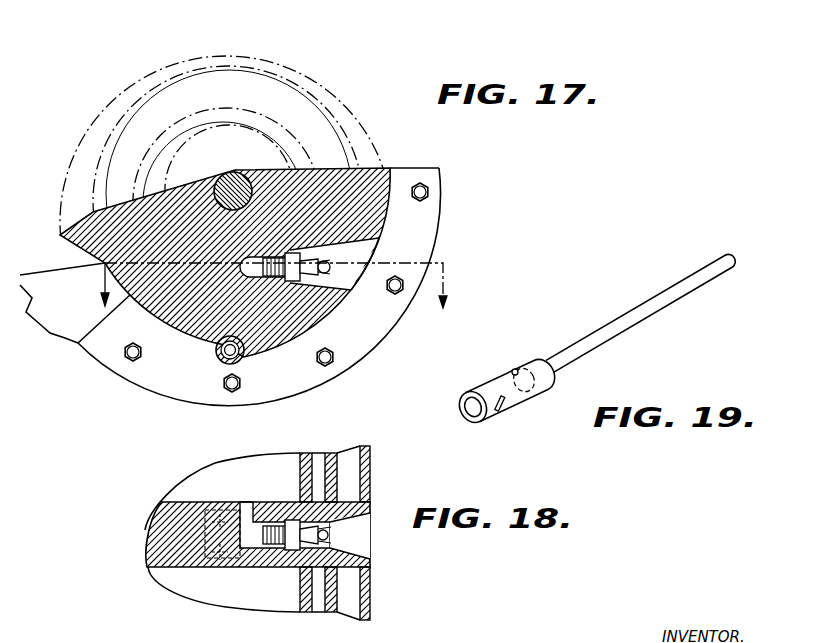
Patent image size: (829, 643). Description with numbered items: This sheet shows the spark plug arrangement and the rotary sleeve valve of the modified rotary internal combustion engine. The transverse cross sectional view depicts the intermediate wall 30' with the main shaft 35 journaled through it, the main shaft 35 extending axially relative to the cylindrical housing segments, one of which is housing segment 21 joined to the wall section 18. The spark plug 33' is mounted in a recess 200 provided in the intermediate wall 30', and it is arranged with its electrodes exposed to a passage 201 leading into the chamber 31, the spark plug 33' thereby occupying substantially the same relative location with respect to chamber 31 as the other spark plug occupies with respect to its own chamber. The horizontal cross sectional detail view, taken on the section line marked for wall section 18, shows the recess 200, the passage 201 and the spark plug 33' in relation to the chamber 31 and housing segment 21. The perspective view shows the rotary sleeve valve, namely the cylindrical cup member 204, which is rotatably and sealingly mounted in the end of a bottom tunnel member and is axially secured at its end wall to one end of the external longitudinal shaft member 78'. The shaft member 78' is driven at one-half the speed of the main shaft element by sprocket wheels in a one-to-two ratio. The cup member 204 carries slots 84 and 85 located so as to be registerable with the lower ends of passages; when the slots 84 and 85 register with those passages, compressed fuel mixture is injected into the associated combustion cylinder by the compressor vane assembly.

In FIG. 17, the intermediate wall 30' is at (414, 321).
In FIG. 18, the intermediate wall 30' is at (414, 321).
In FIG. 17, the main shaft 35 is at (236, 172).
In FIG. 17, the spark plug 33' is at (334, 264).
In FIG. 18, the spark plug 33' is at (350, 536).
In FIG. 17, the passage 201 is at (262, 254).
In FIG. 17, the recess 200 is at (358, 283).
In FIG. 18, the recess 200 is at (368, 542).
In FIG. 17, the cylindrical cup member 204 is at (243, 358).
In FIG. 19, the cylindrical cup member 204 is at (488, 375).
In FIG. 17, the wall section 18 is at (276, 285).
In FIG. 18, the chamber 31 is at (242, 473).
In FIG. 18, the housing segment 21 is at (248, 511).
In FIG. 19, the external longitudinal shaft member 78' is at (640, 310).
In FIG. 19, the slot 85 is at (517, 370).
In FIG. 19, the slot 84 is at (499, 413).